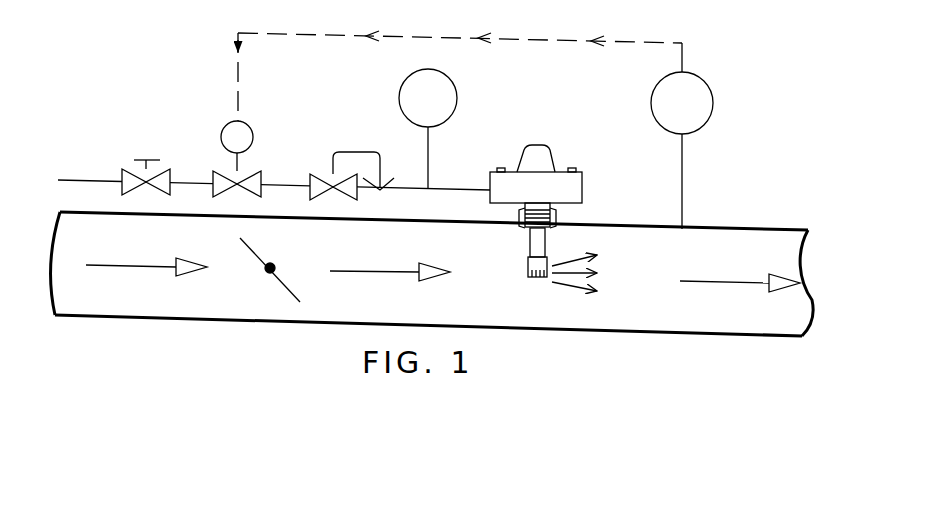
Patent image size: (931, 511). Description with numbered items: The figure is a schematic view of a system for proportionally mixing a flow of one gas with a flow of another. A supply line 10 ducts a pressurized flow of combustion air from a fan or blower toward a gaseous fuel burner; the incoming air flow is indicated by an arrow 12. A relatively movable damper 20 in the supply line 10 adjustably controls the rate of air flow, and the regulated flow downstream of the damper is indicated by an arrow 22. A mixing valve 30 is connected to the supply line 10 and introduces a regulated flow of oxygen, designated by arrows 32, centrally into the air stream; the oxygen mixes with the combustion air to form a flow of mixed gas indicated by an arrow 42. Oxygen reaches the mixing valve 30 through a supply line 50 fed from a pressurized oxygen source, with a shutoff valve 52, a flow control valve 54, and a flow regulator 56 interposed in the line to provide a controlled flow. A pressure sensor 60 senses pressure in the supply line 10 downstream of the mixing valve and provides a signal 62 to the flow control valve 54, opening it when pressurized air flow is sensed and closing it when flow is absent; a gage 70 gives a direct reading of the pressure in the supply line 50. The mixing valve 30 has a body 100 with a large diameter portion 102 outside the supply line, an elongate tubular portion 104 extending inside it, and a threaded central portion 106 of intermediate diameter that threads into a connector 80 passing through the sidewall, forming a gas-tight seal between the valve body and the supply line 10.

The supply line 10 is at (161, 325).
The arrow 12 is at (122, 268).
The damper 20 is at (275, 256).
The arrow 22 is at (348, 272).
The mixing valve 30 is at (526, 236).
The arrows 32 is at (562, 268).
The arrow 42 is at (720, 283).
The supply line 50 is at (70, 174).
The shutoff valve 52 is at (172, 167).
The flow control valve 54 is at (261, 171).
The flow regulator 56 is at (318, 173).
The pressure sensor 60 is at (728, 91).
The signal 62 is at (246, 32).
The gage 70 is at (457, 86).
The threaded connector 80 is at (519, 213).
The body 100 is at (556, 161).
The large diameter portion 102 is at (583, 184).
The tubular portion 104 is at (548, 245).
The threaded central portion 106 is at (556, 220).